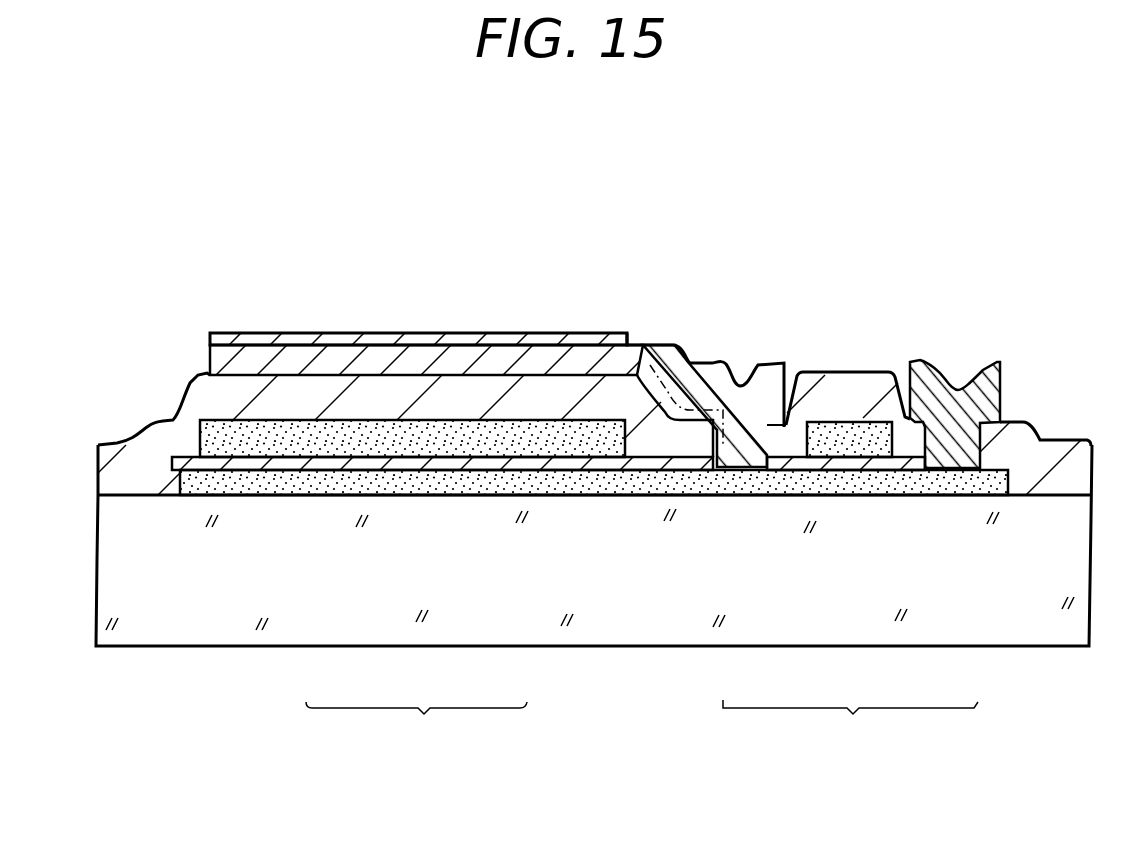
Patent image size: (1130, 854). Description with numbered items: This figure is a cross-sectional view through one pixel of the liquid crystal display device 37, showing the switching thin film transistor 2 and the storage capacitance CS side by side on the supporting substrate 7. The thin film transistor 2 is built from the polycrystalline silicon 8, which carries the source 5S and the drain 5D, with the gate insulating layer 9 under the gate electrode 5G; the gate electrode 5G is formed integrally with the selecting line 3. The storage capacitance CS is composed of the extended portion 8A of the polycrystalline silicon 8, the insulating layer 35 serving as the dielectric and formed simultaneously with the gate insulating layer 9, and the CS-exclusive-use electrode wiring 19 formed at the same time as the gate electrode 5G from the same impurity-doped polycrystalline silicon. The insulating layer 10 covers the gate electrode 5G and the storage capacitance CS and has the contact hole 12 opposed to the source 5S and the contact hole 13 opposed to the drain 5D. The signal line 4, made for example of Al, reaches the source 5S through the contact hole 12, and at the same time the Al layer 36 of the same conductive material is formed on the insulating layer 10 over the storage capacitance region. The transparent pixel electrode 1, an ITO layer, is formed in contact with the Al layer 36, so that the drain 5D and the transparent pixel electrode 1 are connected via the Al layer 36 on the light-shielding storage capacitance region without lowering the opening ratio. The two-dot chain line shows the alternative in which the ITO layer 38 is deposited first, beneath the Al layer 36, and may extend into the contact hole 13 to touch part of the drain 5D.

The transparent pixel electrode 1 is at (362, 338).
The switching thin film transistor 2 is at (862, 752).
The selecting line 3 is at (848, 538).
The signal line 4 is at (990, 368).
The drain 5D is at (760, 476).
The gate electrode 5G is at (823, 445).
The source 5S is at (960, 480).
The transparent glass substrate 7 is at (1017, 633).
The polycrystalline silicon 8 is at (892, 485).
The extended portion of the polycrystalline silicon 8A is at (335, 495).
The gate insulating layer 9 is at (800, 462).
The insulating layer 10 is at (193, 407).
The contact hole 12 is at (980, 453).
The contact hole 13 is at (727, 447).
The CS-exclusive-use electrode wiring 19 is at (445, 443).
The insulating layer 35 is at (533, 463).
The Al layer 36 is at (535, 352).
The liquid crystal display device 37 is at (758, 209).
The ITO layer 38 is at (650, 337).
The storage capacitance CS is at (416, 728).